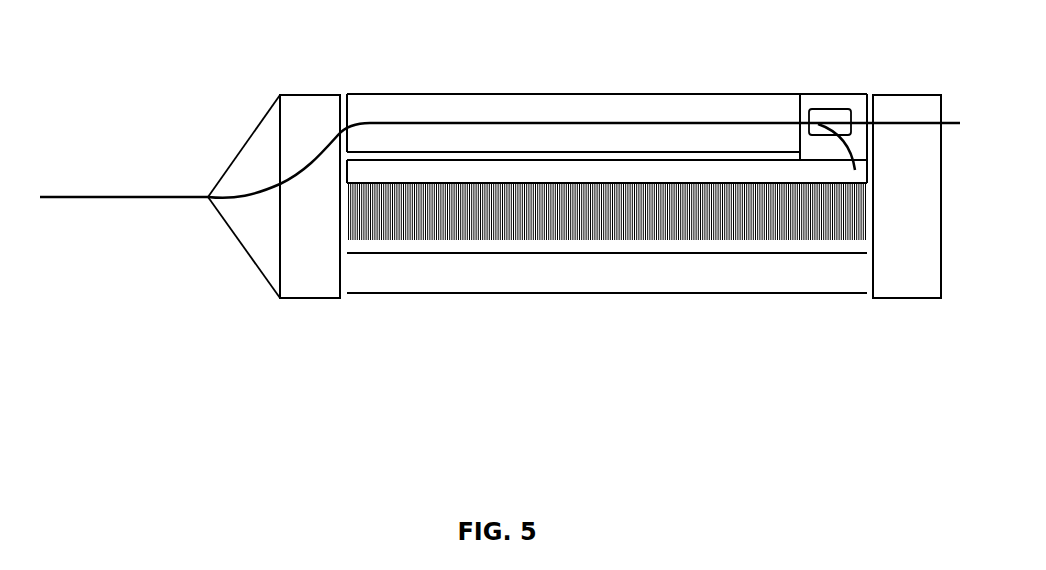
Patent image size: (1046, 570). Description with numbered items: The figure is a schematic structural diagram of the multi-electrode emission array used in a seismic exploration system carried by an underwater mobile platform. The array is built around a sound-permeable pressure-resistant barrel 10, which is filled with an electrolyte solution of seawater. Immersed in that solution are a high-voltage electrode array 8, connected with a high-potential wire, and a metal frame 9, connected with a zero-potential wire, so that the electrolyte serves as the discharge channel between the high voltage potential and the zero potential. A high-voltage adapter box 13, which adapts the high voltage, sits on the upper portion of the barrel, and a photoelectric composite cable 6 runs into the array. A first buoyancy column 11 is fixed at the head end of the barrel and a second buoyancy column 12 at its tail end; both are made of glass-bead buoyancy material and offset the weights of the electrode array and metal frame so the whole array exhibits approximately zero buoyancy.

The photoelectric composite cable 6 is at (125, 192).
The high-voltage electrode array 8 is at (600, 180).
The metal frame 9 is at (607, 253).
The sound-permeable pressure-resistant barrel 10 is at (608, 293).
The first buoyancy column 11 is at (325, 95).
The second buoyancy column 12 is at (895, 94).
The high-voltage adapter box 13 is at (819, 108).